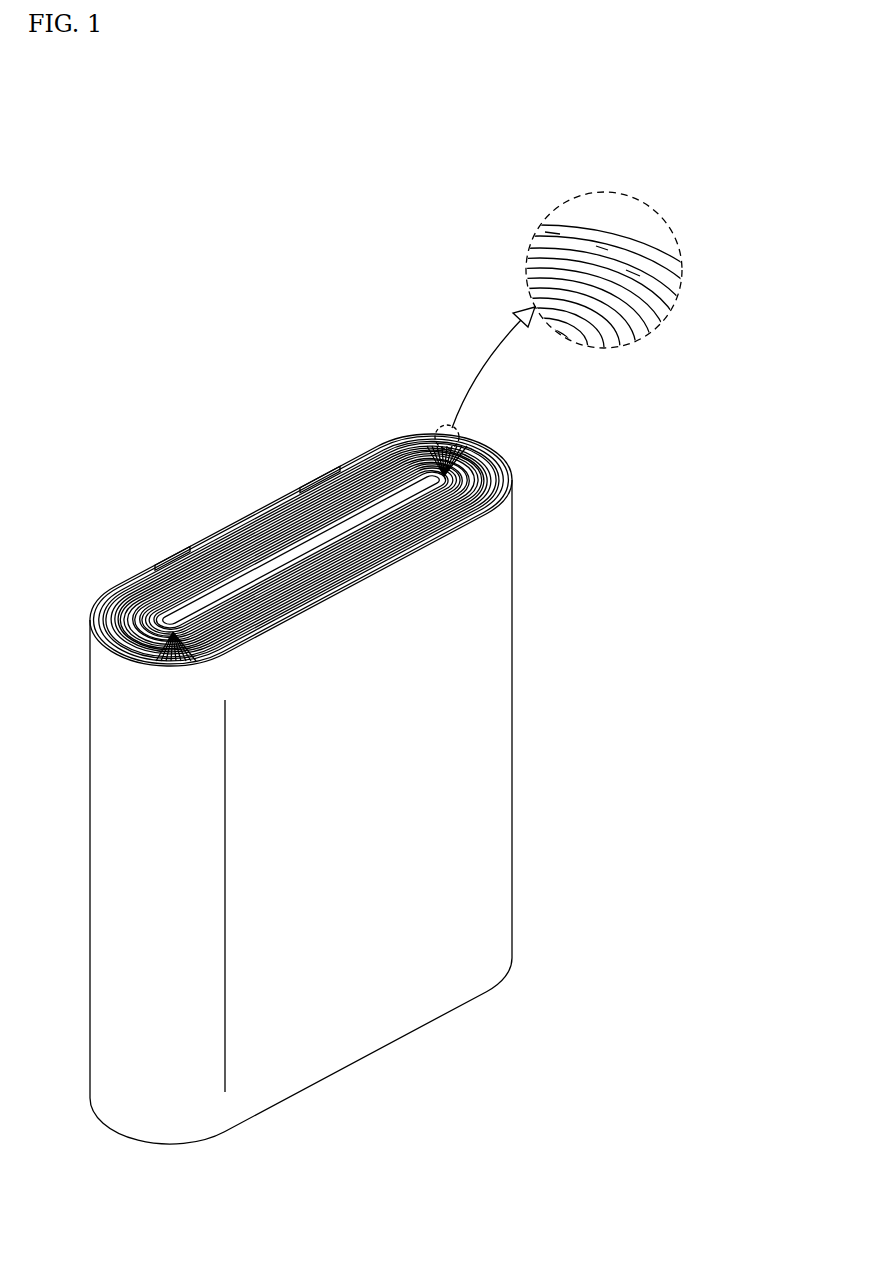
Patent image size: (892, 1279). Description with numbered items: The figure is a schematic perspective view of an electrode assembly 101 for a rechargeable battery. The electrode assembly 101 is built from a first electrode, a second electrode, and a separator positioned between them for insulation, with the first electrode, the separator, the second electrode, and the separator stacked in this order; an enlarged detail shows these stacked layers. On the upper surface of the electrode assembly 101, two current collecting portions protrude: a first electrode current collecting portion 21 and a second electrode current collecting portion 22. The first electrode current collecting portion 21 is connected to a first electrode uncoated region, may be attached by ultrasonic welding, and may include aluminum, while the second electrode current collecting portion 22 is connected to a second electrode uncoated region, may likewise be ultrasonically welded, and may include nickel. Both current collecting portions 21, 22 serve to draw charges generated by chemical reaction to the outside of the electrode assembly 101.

The electrode assembly 101 is at (270, 308).
The first electrode current collecting portion 21 is at (170, 557).
The second electrode current collecting portion 22 is at (272, 508).